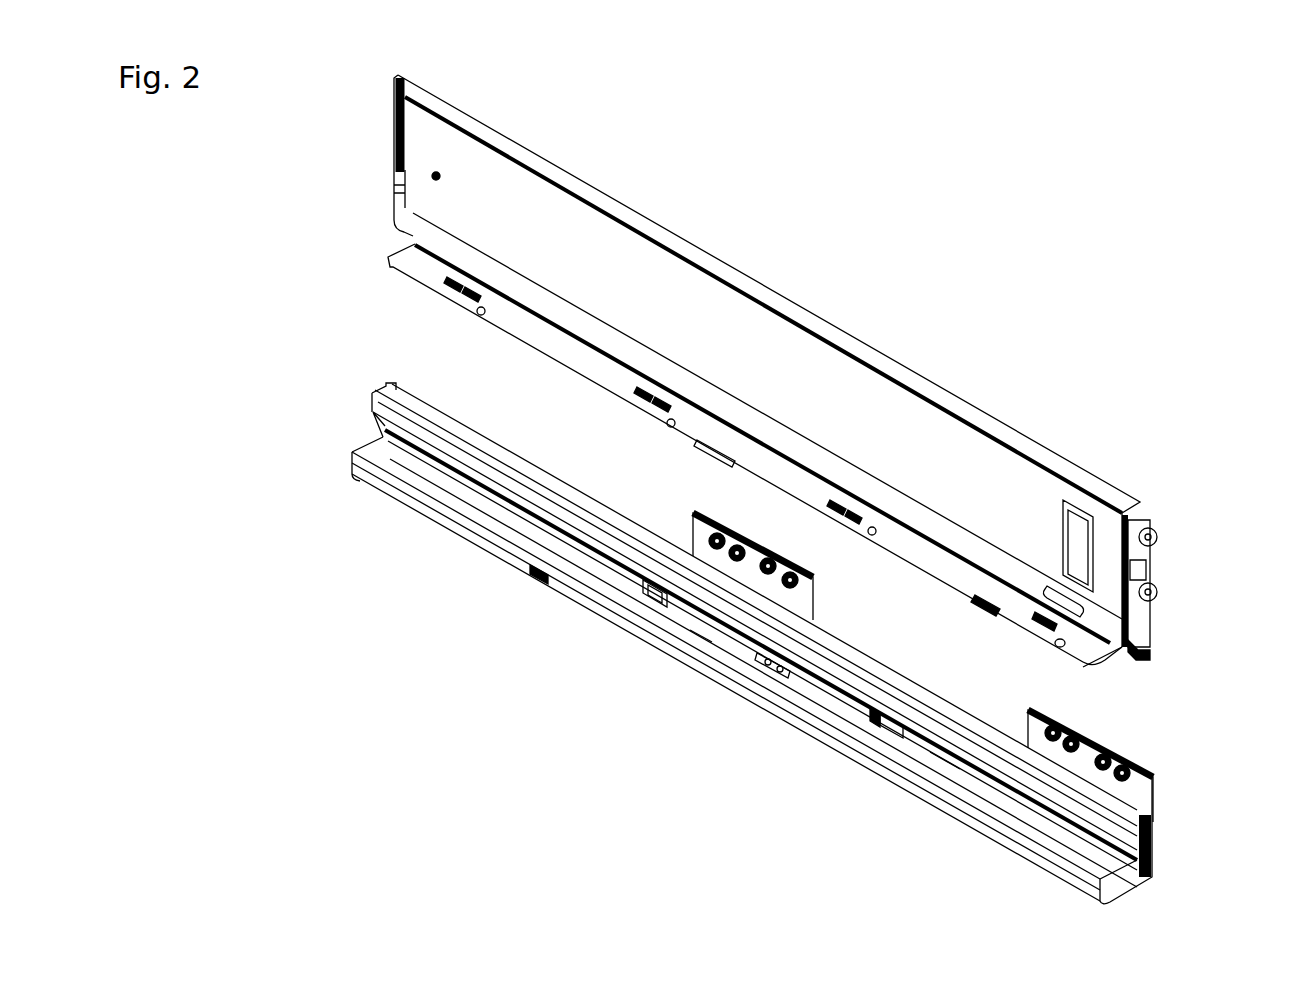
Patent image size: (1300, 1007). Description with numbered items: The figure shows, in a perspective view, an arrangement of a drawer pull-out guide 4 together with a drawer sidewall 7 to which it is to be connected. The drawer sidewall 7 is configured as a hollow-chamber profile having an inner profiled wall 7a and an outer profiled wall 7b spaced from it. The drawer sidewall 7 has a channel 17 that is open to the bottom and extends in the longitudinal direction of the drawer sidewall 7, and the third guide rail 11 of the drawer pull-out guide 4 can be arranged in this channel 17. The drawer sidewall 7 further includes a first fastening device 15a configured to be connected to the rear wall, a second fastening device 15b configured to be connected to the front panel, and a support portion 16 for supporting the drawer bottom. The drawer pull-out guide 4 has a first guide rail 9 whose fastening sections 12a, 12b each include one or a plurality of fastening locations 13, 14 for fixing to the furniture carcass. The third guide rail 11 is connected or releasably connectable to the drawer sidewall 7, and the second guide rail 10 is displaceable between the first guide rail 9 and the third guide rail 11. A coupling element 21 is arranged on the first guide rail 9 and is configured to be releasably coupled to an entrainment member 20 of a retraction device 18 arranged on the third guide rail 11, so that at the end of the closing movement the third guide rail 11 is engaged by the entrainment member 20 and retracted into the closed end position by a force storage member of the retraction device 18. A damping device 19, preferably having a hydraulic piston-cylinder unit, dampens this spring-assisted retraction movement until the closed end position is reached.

The drawer pull-out guide 4 is at (764, 650).
The drawer sidewall 7 is at (765, 373).
The inner profiled wall 7a is at (430, 208).
The outer profiled wall 7b is at (990, 416).
The first guide rail 9 is at (523, 563).
The second guide rail 10 is at (1085, 857).
The third guide rail 11 is at (886, 680).
The fastening section 12a is at (690, 518).
The fastening section 12b is at (1155, 792).
The fastening locations 13 is at (795, 572).
The fastening locations 14 is at (1118, 765).
The first fastening device 15a is at (380, 153).
The second fastening device 15b is at (1163, 568).
The support portion 16 is at (440, 276).
The channel 17 is at (1140, 660).
The retraction device 18 is at (700, 638).
The damping device 19 is at (945, 760).
The entrainment member 20 is at (770, 658).
The coupling element 21 is at (655, 601).